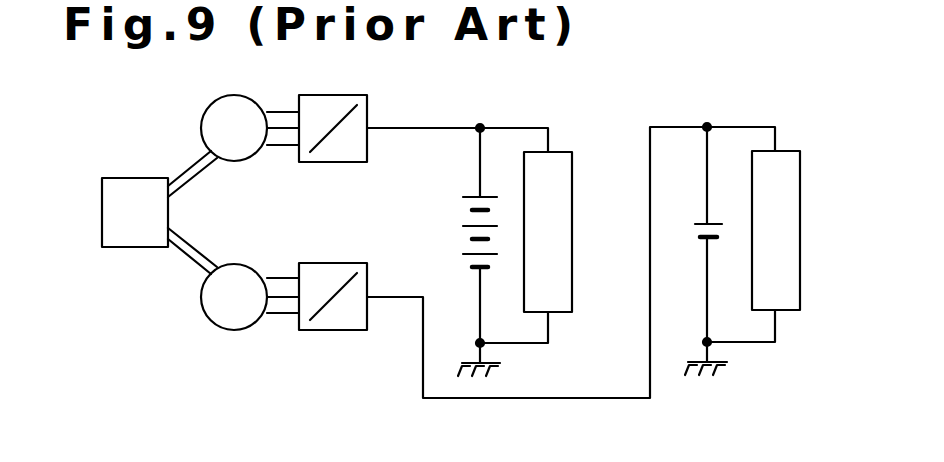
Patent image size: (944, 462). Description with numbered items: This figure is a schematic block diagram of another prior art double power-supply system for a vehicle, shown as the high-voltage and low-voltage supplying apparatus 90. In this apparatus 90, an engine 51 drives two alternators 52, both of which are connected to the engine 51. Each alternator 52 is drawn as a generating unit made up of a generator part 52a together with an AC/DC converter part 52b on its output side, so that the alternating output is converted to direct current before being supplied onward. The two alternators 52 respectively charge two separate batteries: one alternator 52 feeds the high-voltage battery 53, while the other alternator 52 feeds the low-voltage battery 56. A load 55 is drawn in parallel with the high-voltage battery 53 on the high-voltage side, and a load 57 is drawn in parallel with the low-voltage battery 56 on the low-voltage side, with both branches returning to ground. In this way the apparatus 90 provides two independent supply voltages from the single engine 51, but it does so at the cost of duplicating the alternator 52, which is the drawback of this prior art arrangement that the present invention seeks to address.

The engine 51 is at (140, 247).
The alternator 52 is at (284, 262).
The alternator 52a is at (234, 161).
The AC/DC converter 52b is at (327, 239).
The high-voltage battery 53 is at (469, 197).
The load 55 is at (572, 203).
The low-voltage battery 56 is at (697, 223).
The load 57 is at (800, 198).
The high-voltage and low-voltage supplying apparatus 90 is at (808, 97).